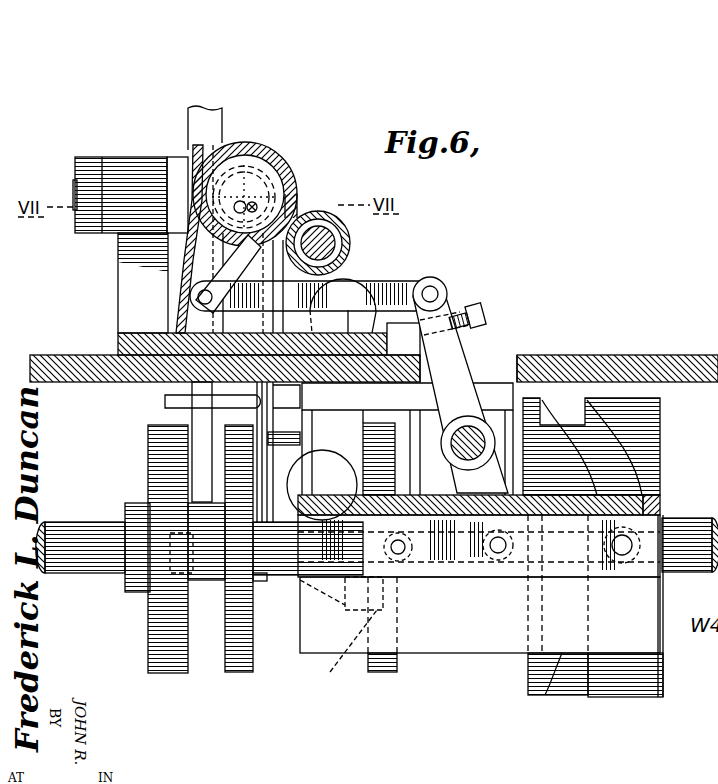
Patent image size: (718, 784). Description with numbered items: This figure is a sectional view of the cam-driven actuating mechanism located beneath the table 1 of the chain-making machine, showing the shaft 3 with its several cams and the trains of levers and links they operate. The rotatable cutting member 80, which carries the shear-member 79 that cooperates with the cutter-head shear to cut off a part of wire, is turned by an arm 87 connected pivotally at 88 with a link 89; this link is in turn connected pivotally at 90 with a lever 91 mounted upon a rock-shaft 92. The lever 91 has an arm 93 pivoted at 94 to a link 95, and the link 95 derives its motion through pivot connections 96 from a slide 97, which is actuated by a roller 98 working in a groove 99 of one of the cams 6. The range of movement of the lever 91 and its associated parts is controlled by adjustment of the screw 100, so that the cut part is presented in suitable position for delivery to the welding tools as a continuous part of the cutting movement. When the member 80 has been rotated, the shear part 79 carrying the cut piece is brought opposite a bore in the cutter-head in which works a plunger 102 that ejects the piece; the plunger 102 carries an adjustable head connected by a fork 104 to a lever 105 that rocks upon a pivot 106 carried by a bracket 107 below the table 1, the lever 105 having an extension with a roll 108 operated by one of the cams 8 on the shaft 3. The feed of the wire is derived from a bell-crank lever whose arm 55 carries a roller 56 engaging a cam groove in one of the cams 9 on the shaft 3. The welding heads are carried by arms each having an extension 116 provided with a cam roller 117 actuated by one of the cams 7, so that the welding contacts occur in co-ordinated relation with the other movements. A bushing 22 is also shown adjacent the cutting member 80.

The table 1 is at (640, 355).
The shaft 3 is at (72, 522).
The cam 6 is at (625, 697).
The cam 7 is at (165, 673).
The cam 8 is at (228, 672).
The cam 9 is at (378, 672).
The bushing 22 is at (351, 236).
The arm 55 is at (308, 486).
The roller 56 is at (341, 634).
The shear-member 79 is at (239, 200).
The rotatable cutting member 80 is at (275, 152).
The arm 87 is at (207, 240).
The pivot 88 is at (197, 297).
The link 89 is at (233, 320).
The pivot 90 is at (432, 286).
The lever 91 is at (448, 342).
The rock-shaft 92 is at (470, 428).
The arm 93 is at (465, 478).
The pivot 94 is at (500, 556).
The link 95 is at (482, 578).
The pivot connections 96 is at (400, 556).
The slide 97 is at (470, 577).
The roller 98 is at (657, 513).
The groove 99 is at (597, 663).
The screw 100 is at (478, 307).
The plunger 102 is at (258, 207).
The fork 104 is at (298, 189).
The lever 105 is at (225, 487).
The pivot 106 is at (258, 420).
The bracket 107 is at (262, 460).
The roll 108 is at (260, 578).
The extension 116 is at (207, 478).
The cam roller 117 is at (168, 540).